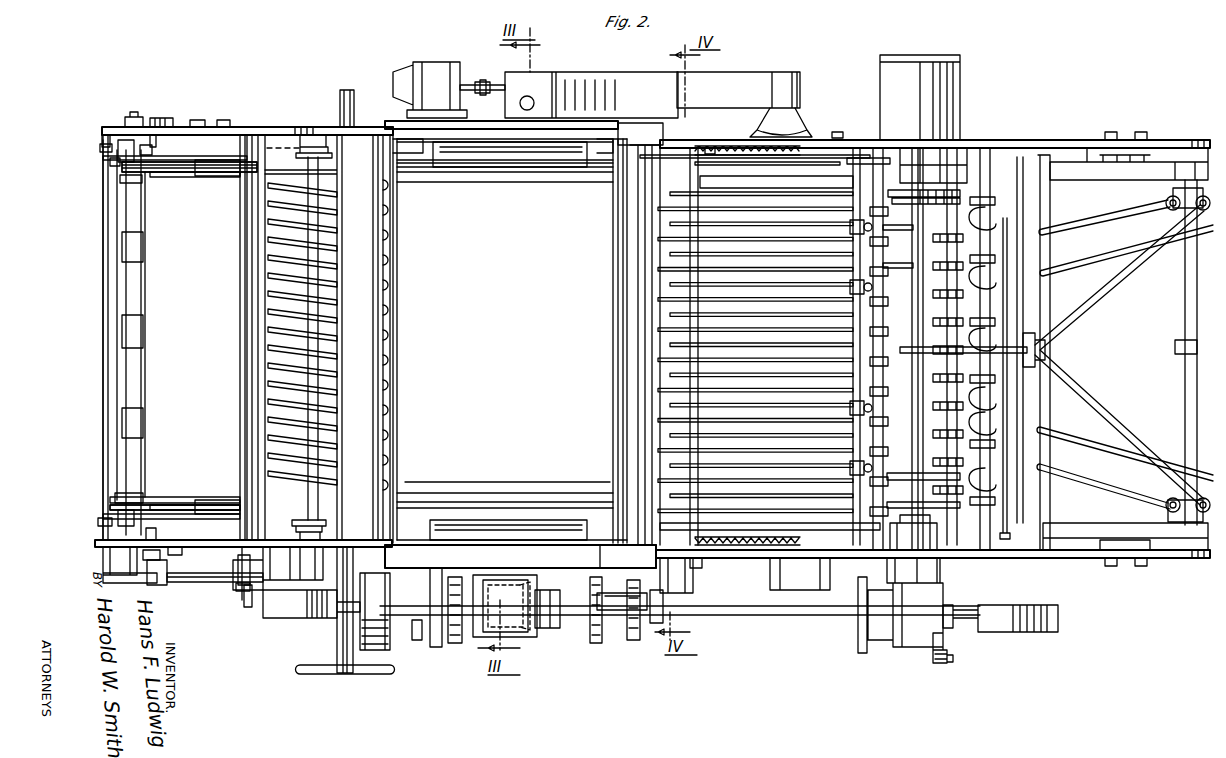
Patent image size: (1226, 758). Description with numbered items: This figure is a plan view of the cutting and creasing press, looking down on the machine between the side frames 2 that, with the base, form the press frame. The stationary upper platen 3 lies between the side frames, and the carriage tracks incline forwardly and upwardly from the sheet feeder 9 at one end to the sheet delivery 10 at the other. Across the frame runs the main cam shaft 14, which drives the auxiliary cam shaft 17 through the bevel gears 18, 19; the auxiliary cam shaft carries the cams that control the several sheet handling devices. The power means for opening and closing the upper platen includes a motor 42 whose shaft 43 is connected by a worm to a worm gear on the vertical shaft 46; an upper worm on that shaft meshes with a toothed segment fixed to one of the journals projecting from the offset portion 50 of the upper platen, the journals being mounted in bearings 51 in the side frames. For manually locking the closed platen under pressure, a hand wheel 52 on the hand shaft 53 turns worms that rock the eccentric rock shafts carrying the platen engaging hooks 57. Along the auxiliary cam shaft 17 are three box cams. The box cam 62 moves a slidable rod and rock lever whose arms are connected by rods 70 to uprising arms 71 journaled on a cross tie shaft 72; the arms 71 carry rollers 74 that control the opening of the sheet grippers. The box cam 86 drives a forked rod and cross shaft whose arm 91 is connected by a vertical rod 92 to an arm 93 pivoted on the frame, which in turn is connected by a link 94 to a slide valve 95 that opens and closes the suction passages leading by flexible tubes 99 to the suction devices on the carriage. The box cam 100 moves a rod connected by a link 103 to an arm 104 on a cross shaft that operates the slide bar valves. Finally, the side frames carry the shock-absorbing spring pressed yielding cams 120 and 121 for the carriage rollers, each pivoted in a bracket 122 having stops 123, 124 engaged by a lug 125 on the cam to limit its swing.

The side frames 2 is at (857, 140).
The stationary upper platen 3 is at (510, 339).
The sheet feeder 9 is at (1048, 349).
The sheet delivery 10 is at (180, 337).
The main cam shaft 14 is at (680, 606).
The auxiliary cam shaft 17 is at (572, 617).
The bevel gear 18 is at (496, 583).
The bevel gear 19 is at (528, 625).
The motor 42 is at (438, 72).
The motor shaft 43 is at (490, 82).
The vertical shaft 46 is at (732, 97).
The offset portion of the upper platen 50 is at (640, 150).
The bearings 51 is at (631, 345).
The hand wheel 52 is at (345, 679).
The hand shaft 53 is at (352, 90).
The platen engaging hooks 57 is at (508, 341).
The box cam 62 is at (395, 640).
The rods 70 is at (220, 176).
The uprising arms 71 is at (108, 160).
The cross tie shaft 72 is at (103, 390).
The rollers 74 is at (150, 158).
The box cam 86 is at (432, 645).
The arm 91 is at (250, 607).
The vertical rod 92 is at (241, 600).
The arm 93 is at (245, 585).
The link 94 is at (240, 576).
The slide valve 95 is at (252, 250).
The tubes 99 is at (293, 310).
The box cam 100 is at (596, 643).
The link 103 is at (605, 600).
The arm 104 is at (632, 640).
The spring pressed yielding cams 120 is at (720, 160).
The spring pressed yielding cams 121 is at (176, 177).
The bracket 122 is at (160, 117).
The stop 123 is at (148, 160).
The stop 124 is at (100, 148).
The lug 125 is at (150, 160).